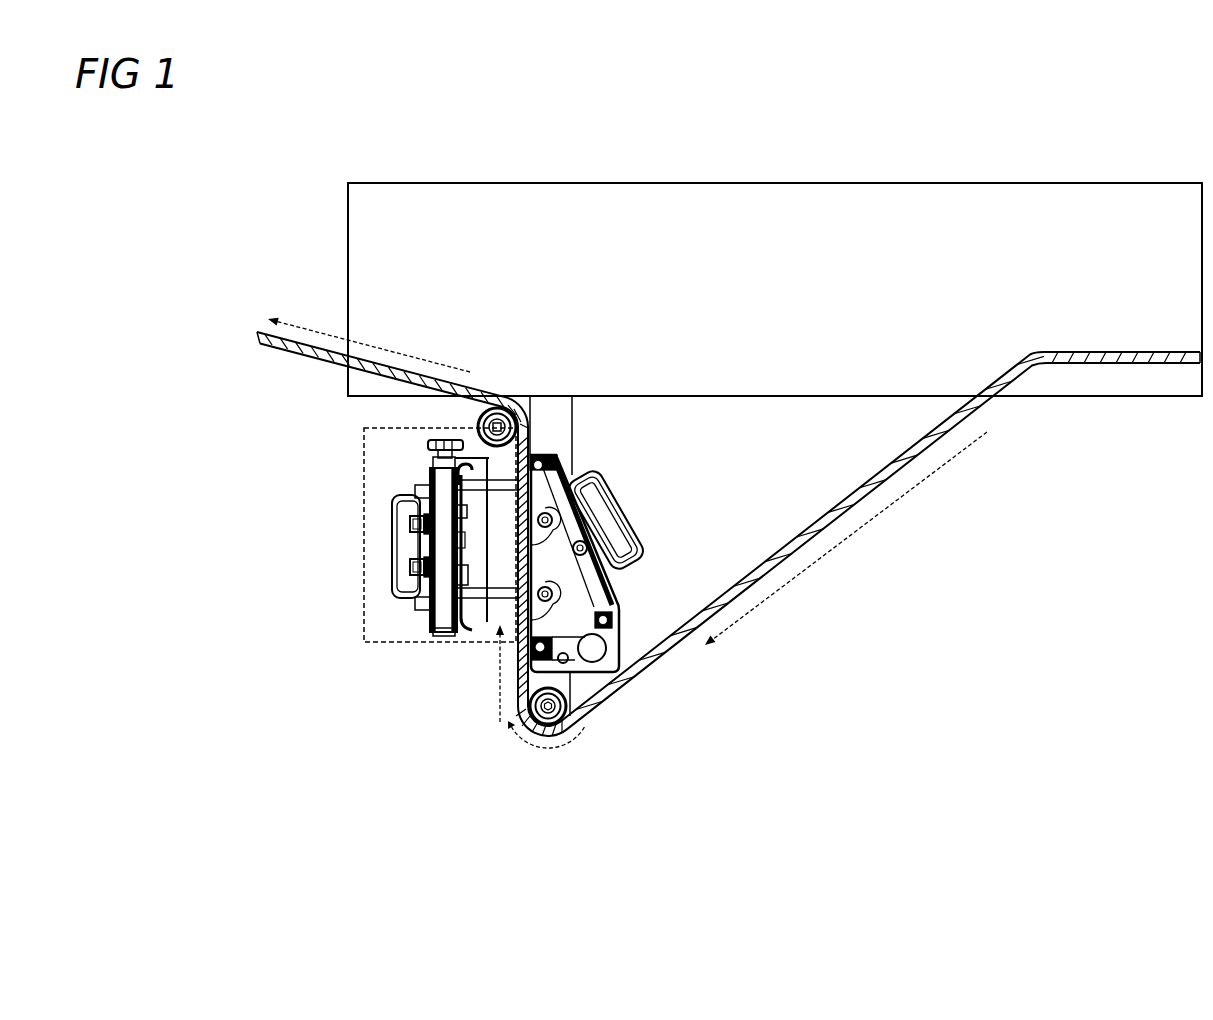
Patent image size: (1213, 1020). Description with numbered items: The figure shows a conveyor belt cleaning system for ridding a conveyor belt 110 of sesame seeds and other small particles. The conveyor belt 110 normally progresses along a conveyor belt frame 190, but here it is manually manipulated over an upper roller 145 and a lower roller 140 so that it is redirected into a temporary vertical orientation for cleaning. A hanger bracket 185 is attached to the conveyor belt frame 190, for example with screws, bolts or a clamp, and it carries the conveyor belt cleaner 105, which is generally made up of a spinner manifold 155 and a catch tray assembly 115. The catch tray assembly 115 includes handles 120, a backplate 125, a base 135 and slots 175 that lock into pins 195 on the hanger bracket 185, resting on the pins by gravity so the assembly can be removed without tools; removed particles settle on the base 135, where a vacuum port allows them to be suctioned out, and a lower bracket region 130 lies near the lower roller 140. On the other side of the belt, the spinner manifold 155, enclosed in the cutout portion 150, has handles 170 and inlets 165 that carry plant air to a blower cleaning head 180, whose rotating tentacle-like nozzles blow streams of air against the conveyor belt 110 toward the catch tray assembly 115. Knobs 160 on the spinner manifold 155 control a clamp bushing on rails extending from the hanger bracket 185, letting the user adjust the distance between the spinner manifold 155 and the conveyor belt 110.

The conveyor belt cleaner 105 is at (370, 745).
The conveyor belt 110 is at (650, 668).
The catch tray assembly 115 is at (603, 450).
The handles 120 is at (618, 484).
The backplate 125 is at (553, 525).
The lower bracket 130 is at (602, 668).
The base 135 is at (563, 630).
The lower roller 140 is at (596, 713).
The upper roller 145 is at (478, 423).
The cutout portion 150 is at (362, 636).
The spinner manifold 155 is at (385, 472).
The knobs 160 is at (427, 442).
The inlets 165 is at (410, 524).
The handles 170 is at (392, 548).
The slots 175 is at (556, 594).
The cleaning head 180 is at (404, 606).
The hanger bracket 185 is at (574, 413).
The conveyor belt frame 190 is at (775, 289).
The pins 195 is at (590, 549).